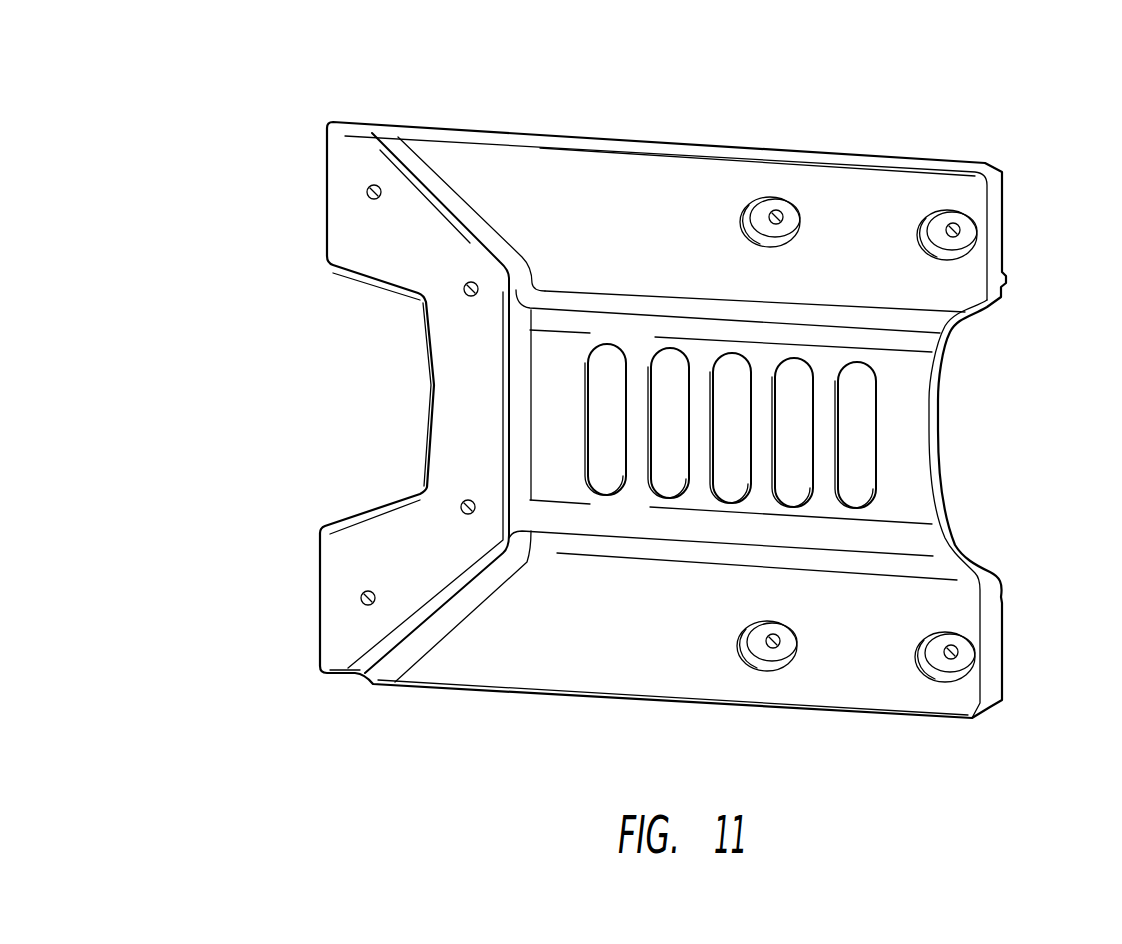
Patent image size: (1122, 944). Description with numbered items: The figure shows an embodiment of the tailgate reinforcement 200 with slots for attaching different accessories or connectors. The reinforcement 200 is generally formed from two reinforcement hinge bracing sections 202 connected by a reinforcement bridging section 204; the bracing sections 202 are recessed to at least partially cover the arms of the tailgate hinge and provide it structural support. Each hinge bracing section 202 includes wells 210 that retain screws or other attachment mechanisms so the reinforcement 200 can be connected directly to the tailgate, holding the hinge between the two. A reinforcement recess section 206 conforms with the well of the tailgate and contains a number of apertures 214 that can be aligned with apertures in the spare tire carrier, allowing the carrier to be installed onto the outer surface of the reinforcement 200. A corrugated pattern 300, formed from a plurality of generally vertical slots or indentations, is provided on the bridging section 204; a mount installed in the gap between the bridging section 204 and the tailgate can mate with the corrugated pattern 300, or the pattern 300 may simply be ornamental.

The tailgate reinforcement 200 is at (623, 138).
The reinforcement hinge bracing section 202 is at (680, 177).
The reinforcement bridging section 204 is at (702, 493).
The reinforcement recess section 206 is at (450, 422).
The wells 210 is at (953, 212).
The apertures 214 is at (358, 598).
The corrugated pattern 300 is at (840, 400).